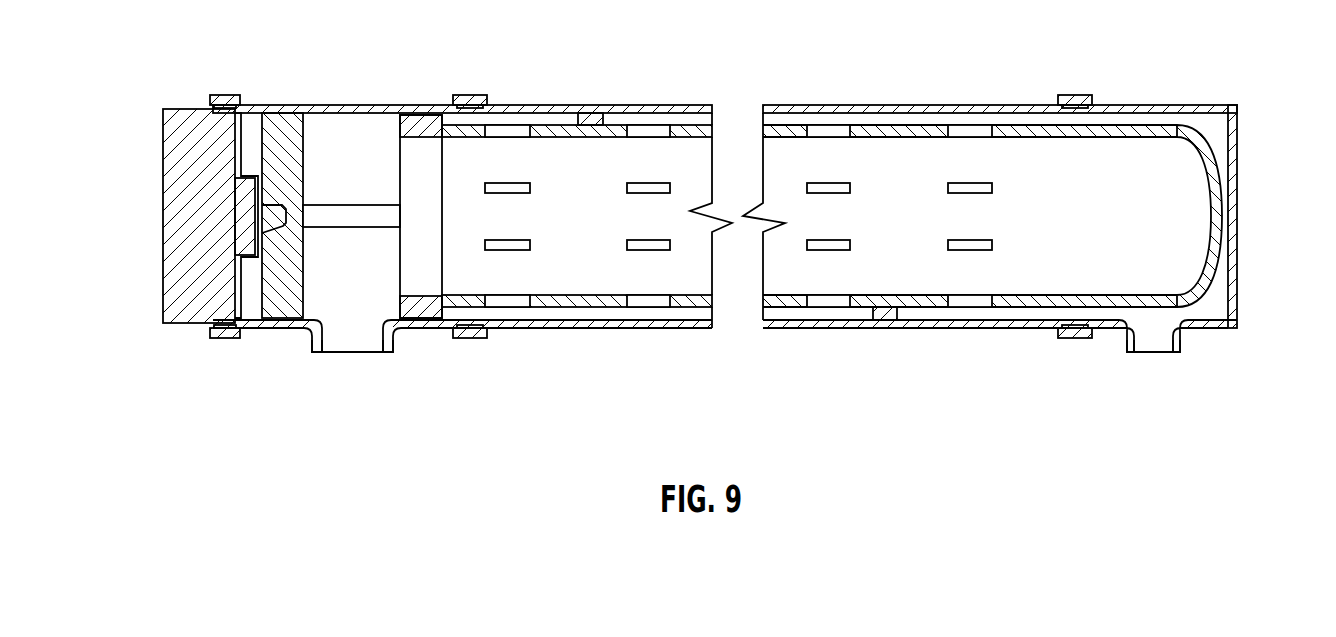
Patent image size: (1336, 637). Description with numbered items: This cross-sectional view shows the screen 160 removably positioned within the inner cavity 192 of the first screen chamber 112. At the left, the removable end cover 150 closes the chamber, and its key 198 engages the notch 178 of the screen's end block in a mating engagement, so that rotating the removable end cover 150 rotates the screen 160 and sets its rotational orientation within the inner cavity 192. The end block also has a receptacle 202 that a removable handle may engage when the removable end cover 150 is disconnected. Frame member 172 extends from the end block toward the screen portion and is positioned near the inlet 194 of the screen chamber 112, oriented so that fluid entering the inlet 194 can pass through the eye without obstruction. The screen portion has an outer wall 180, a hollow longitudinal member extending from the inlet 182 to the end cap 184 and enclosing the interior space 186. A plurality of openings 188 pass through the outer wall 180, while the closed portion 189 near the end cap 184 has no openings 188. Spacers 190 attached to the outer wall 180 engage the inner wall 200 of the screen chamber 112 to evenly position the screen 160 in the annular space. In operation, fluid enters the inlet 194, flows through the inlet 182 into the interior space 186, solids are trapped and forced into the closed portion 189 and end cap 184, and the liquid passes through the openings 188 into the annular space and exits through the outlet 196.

The first screen chamber 112 is at (1192, 108).
The removable end cover 150 is at (182, 228).
The screen 160 is at (540, 114).
The frame member 172 is at (352, 217).
The notch 178 is at (250, 308).
The outer wall 180 is at (683, 132).
The inlet 182 is at (412, 282).
The end cap 184 is at (1218, 213).
The interior space 186 is at (778, 157).
The openings 188 is at (970, 187).
The closed portion 189 is at (1023, 307).
The spacers 190 is at (595, 123).
The inner cavity 192 is at (880, 120).
The inlet 194 is at (342, 335).
The outlet 196 is at (1153, 340).
The key 198 is at (248, 197).
The inner wall 200 is at (975, 112).
The receptacle 202 is at (273, 215).